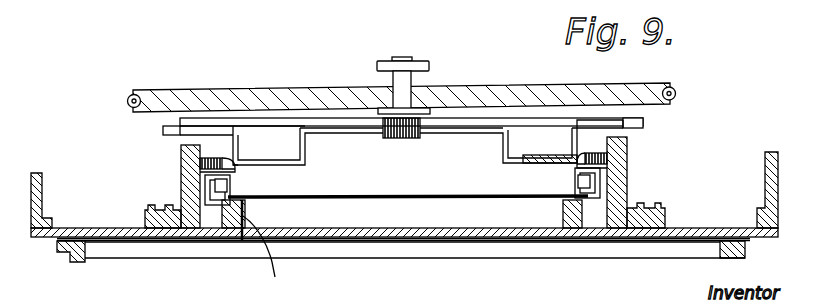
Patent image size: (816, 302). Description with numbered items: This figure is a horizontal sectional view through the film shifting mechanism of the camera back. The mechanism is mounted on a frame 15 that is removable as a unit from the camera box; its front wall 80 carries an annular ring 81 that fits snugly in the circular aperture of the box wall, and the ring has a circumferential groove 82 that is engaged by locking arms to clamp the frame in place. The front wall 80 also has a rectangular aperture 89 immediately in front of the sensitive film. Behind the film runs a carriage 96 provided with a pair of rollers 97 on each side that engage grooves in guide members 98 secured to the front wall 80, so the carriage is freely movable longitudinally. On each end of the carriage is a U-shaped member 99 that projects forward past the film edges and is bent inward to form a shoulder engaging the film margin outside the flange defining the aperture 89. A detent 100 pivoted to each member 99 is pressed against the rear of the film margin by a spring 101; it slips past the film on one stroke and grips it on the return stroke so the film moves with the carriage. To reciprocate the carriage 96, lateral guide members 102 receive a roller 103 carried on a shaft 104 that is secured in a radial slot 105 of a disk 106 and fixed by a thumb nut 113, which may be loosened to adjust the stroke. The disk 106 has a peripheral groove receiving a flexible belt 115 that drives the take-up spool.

The frame 15 is at (57, 178).
The front wall 80 is at (128, 229).
The annular ring 81 is at (90, 246).
The circumferential groove 82 is at (70, 250).
The aperture 89 is at (271, 247).
The carriage 96 is at (661, 123).
The rollers 97 is at (203, 164).
The guide members 98 is at (185, 150).
The U-shaped member 99 is at (215, 190).
The detent 100 is at (258, 196).
The spring 101 is at (230, 192).
The lateral guide members 102 is at (470, 130).
The roller 103 is at (391, 140).
The shaft 104 is at (392, 98).
The radial slot 105 is at (418, 100).
The disk 106 is at (248, 90).
The thumb nut 113 is at (378, 63).
The flexible belt 115 is at (678, 92).